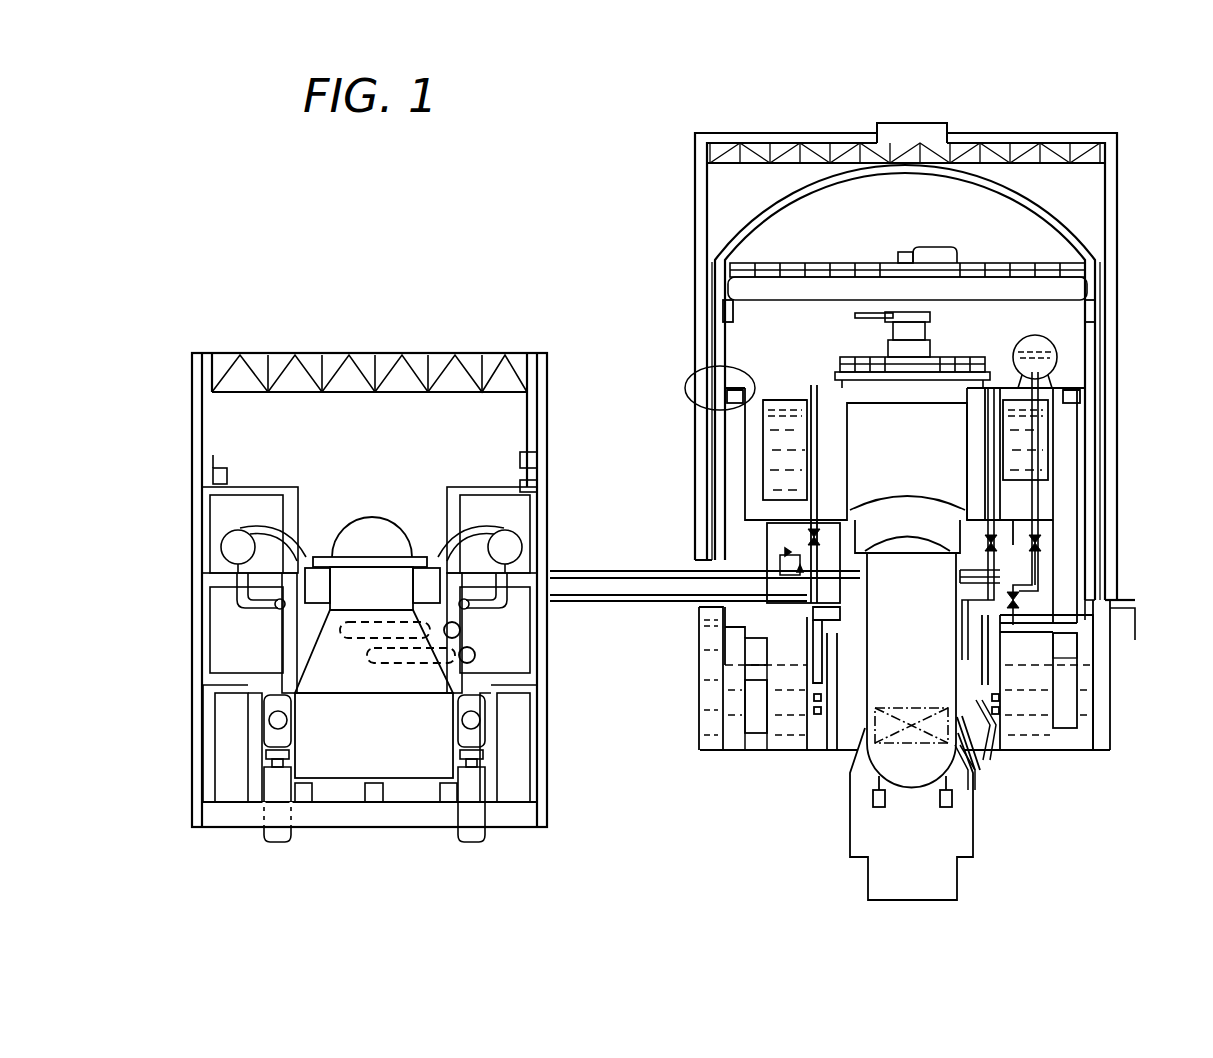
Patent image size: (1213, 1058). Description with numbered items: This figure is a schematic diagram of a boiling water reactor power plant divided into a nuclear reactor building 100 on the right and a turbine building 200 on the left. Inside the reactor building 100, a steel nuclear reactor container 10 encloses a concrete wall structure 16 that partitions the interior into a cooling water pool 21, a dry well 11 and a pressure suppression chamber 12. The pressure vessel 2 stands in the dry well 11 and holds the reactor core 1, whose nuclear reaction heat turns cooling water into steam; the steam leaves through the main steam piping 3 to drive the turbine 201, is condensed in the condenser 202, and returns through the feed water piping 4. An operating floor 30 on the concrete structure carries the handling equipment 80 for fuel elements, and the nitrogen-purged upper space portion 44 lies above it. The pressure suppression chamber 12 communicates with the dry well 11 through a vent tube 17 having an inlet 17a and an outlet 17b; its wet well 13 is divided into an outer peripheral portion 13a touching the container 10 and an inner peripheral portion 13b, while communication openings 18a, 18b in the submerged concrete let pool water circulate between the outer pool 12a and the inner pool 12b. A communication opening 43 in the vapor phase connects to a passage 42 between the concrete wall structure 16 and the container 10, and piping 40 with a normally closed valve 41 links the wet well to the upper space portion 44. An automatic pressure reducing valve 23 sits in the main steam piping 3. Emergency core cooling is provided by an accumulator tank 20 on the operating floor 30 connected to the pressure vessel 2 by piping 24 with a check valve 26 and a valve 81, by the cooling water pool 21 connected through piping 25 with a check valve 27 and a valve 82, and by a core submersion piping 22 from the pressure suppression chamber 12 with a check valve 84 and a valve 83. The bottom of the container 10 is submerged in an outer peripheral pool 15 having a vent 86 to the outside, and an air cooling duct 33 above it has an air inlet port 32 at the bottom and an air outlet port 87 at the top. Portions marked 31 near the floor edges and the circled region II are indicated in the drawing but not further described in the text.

The reactor core 1 is at (905, 745).
The pressure vessel 2 is at (965, 770).
The main steam piping 3 is at (690, 572).
The feed water piping 4 is at (680, 603).
The nuclear reactor container 10 is at (1085, 212).
The dry well 11 is at (760, 523).
The pressure suppression chamber 12 is at (718, 752).
The outer pool 12a is at (730, 737).
The inner pool 12b is at (788, 752).
The wet well 13 is at (735, 680).
The outer peripheral portion 13a is at (711, 625).
The inner peripheral portion 13b is at (740, 715).
The outer peripheral pool 15 is at (1090, 720).
The concrete wall structure 16 is at (1065, 718).
The vent tube 17 is at (823, 672).
The inlet 17a is at (842, 616).
The outlet 17b is at (838, 710).
The communication opening 18a is at (753, 748).
The communication opening 18b is at (1085, 670).
The accumulator tank 20 is at (1013, 350).
The cooling water pool 21 is at (778, 400).
The core submersion piping 22 is at (987, 725).
The automatic pressure reducing valve 23 is at (780, 558).
The piping 24 is at (1045, 425).
The piping 25 is at (1000, 495).
The check valve 26 is at (1095, 530).
The check valve 27 is at (990, 525).
The operating floor 30 is at (812, 388).
The floor bracket 31 is at (740, 388).
The air inlet port 32 is at (1112, 583).
The air cooling duct 33 is at (740, 225).
The piping 40 is at (785, 455).
The valve 41 is at (822, 537).
The passage 42 is at (1087, 547).
The communication opening 43 is at (1062, 630).
The upper space portion 44 is at (1000, 205).
The handling equipment 80 is at (840, 357).
The valve 81 is at (1060, 540).
The valve 82 is at (1032, 515).
The valve 83 is at (1000, 762).
The check valve 84 is at (968, 780).
The vent 86 is at (1130, 608).
The air outlet port 87 is at (930, 125).
The nuclear reactor building 100 is at (715, 133).
The turbine building 200 is at (370, 353).
The turbine 201 is at (378, 520).
The condenser 202 is at (358, 770).
The detail section II is at (690, 380).